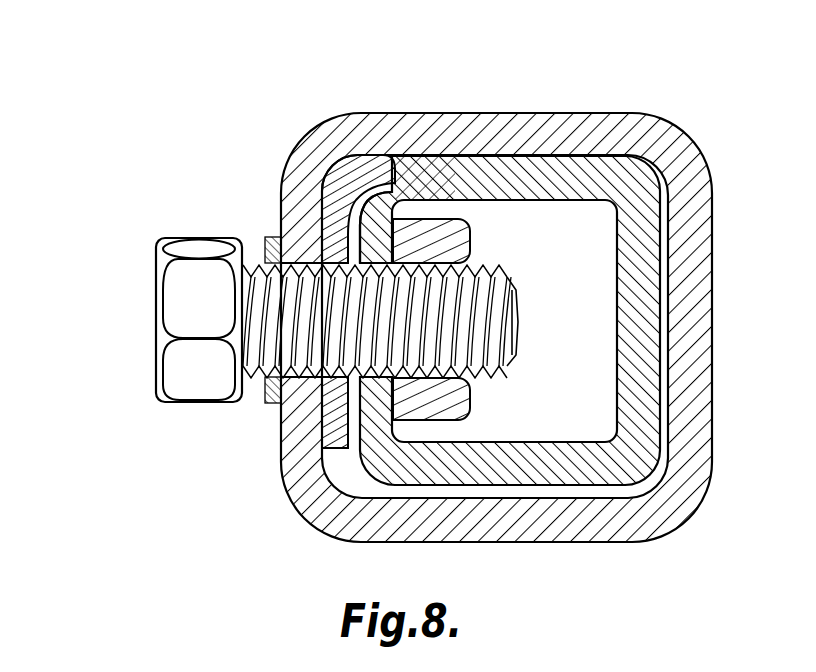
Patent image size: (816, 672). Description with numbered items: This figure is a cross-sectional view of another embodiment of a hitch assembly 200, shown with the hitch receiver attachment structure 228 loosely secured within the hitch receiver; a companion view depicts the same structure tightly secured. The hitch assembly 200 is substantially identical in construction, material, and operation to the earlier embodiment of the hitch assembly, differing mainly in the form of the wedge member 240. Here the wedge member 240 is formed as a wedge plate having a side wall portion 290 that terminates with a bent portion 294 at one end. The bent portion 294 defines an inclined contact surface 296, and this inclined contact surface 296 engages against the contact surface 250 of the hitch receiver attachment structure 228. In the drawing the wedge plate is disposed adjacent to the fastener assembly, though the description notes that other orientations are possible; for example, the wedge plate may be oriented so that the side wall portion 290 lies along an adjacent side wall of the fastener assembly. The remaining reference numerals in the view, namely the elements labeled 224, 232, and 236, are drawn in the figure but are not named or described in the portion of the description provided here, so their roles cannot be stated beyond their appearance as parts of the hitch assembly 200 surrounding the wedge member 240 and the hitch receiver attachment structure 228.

The hitch assembly 200 is at (207, 74).
The frame 224 is at (566, 112).
The hitch receiver attachment structure 228 is at (640, 243).
The screw head 232 is at (153, 262).
The lower clamp block 236 is at (437, 421).
The wedge member 240 is at (296, 170).
The contact surface 250 is at (402, 217).
The side wall portion 290 is at (337, 427).
The bent portion 294 is at (340, 160).
The inclined contact surface 296 is at (415, 188).